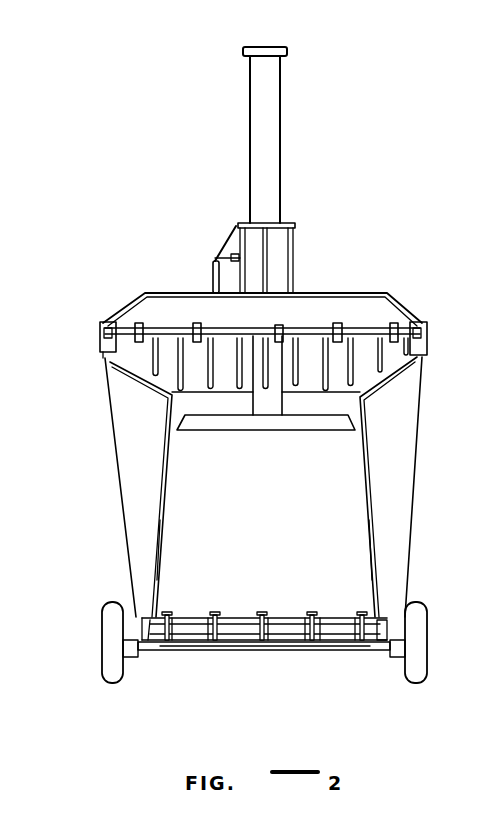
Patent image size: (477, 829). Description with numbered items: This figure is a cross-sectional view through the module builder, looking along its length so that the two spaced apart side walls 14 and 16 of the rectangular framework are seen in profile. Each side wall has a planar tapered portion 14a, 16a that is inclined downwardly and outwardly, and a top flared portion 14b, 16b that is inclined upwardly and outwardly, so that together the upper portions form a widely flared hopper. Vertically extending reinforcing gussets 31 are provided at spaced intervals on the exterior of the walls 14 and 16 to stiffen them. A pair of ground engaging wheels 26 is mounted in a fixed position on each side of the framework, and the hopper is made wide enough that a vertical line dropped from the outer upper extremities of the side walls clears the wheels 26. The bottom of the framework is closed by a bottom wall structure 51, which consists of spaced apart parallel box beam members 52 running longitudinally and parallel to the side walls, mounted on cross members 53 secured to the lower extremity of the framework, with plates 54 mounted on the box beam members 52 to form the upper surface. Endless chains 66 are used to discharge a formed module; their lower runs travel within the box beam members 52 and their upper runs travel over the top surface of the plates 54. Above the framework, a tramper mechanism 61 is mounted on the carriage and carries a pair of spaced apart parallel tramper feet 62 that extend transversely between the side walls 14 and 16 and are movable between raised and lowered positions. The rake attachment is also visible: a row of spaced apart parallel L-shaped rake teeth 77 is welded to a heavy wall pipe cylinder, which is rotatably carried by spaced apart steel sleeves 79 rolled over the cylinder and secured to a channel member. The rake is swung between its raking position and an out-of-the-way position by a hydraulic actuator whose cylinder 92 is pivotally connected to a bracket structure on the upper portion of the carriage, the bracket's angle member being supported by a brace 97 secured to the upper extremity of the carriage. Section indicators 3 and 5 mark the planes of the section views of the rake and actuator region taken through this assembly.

The tramper mechanism 61 is at (295, 183).
The brace 97 is at (230, 240).
The cylinder 92 is at (212, 268).
The sleeves 79 is at (142, 326).
The rake teeth 77 is at (318, 346).
The top flared portion 16b is at (140, 394).
The top flared portion 14b is at (395, 376).
The tramper feet 62 is at (336, 426).
The side wall 16 is at (176, 479).
The side wall 14 is at (355, 478).
The planar tapered portion 16a is at (165, 525).
The planar tapered portion 14a is at (366, 522).
The reinforcing gussets 31 is at (136, 464).
The section line 3- 3 is at (203, 216).
The section line 5- 5 is at (329, 282).
The bottom wall structure 51 is at (305, 598).
The endless chains 66 is at (168, 612).
The plates 54 is at (245, 612).
The box beam members 52 is at (210, 650).
The cross members 53 is at (290, 650).
The ground engaging wheels 26 is at (110, 666).